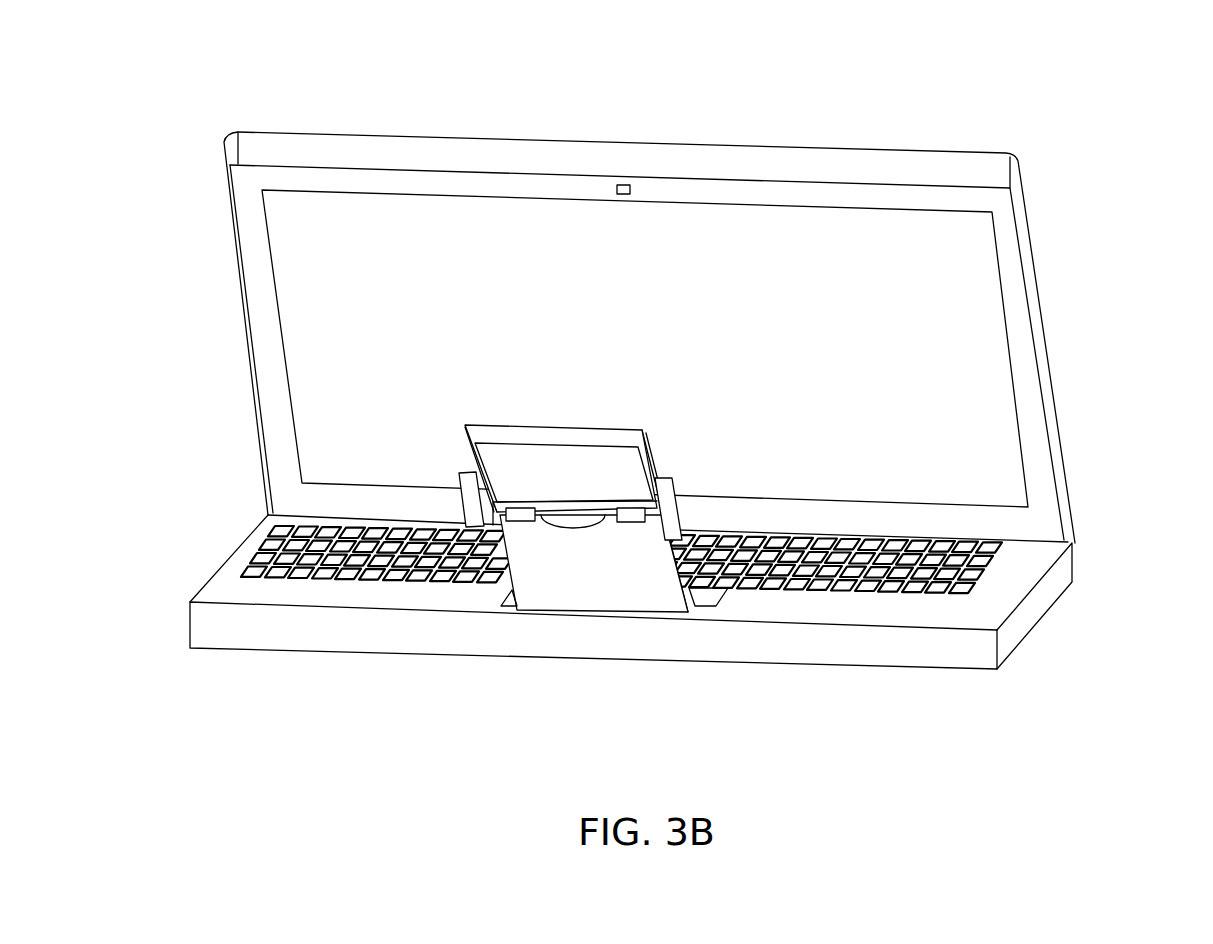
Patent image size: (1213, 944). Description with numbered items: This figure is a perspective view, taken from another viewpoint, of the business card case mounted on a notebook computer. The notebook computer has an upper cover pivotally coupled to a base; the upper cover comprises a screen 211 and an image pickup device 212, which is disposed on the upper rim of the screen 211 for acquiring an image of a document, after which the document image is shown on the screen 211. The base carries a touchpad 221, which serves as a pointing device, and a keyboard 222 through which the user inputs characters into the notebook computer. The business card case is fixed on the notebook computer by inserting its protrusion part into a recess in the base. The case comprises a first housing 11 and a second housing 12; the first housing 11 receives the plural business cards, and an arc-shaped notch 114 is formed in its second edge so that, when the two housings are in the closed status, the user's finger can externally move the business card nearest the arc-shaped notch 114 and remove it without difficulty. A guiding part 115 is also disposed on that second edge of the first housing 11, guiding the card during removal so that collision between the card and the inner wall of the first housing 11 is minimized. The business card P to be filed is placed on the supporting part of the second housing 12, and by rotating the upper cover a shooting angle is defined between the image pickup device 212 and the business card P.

The first housing 11 is at (549, 599).
The second housing 12 is at (556, 452).
The arc-shaped notch 114 is at (584, 530).
The guiding part 115 is at (516, 516).
The screen 211 is at (782, 257).
The image pickup device 212 is at (628, 183).
The touchpad 221 is at (703, 602).
The keyboard 222 is at (985, 552).
The business card P is at (762, 577).